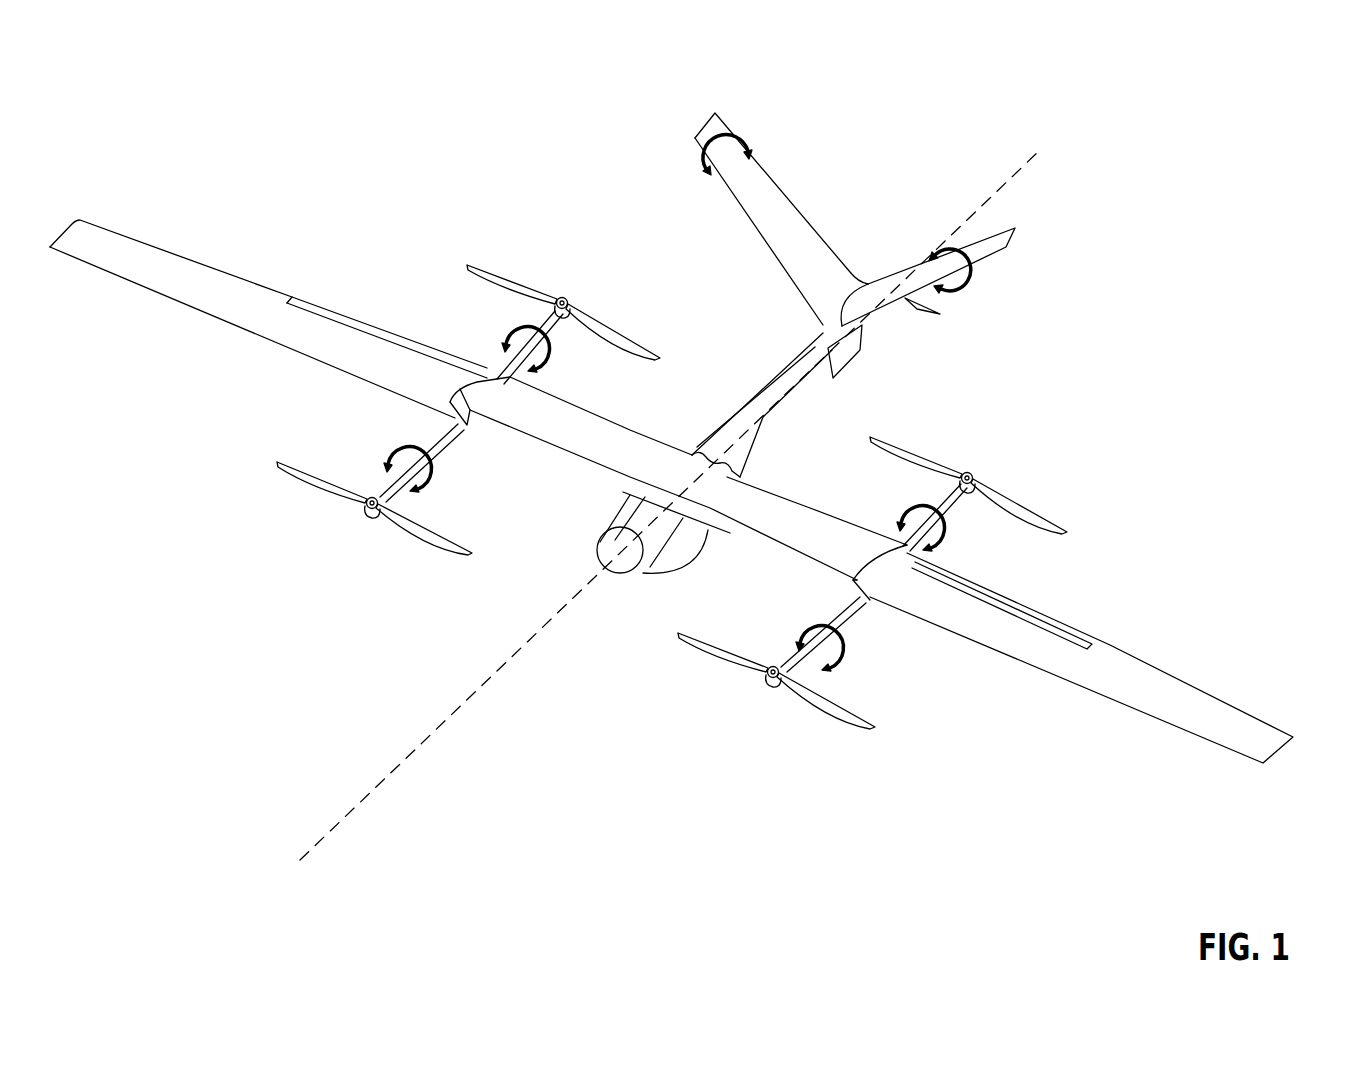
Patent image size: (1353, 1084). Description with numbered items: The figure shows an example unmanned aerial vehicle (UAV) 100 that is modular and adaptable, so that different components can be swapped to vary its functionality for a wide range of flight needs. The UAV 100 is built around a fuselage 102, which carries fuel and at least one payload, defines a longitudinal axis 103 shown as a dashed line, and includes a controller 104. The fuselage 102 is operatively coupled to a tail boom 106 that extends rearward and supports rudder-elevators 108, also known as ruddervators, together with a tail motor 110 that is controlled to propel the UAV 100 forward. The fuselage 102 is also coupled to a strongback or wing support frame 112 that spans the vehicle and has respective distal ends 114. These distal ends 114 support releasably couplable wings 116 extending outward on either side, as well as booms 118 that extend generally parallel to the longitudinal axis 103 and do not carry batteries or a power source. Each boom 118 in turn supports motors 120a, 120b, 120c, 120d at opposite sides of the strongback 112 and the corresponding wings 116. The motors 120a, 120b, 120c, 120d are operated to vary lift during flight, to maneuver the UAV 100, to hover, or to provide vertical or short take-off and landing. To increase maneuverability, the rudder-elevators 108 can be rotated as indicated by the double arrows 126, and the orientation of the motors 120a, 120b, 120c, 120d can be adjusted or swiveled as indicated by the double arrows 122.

The unmanned aerial vehicle 100 is at (1108, 68).
The fuselage 102 is at (562, 564).
The longitudinal axis 103 is at (460, 707).
The controller 104 is at (608, 530).
The tail boom 106 is at (822, 330).
The rudder-elevators 108 is at (765, 205).
The tail motor 110 is at (922, 314).
The strongback 112 is at (802, 533).
The distal ends 114 is at (493, 380).
The wings 116 is at (150, 277).
The booms 118 is at (437, 447).
The motor 120a is at (768, 702).
The motor 120b is at (973, 478).
The motor 120c is at (367, 528).
The motor 120d is at (568, 295).
The double arrows 122 is at (523, 330).
The double arrows 126 is at (705, 180).